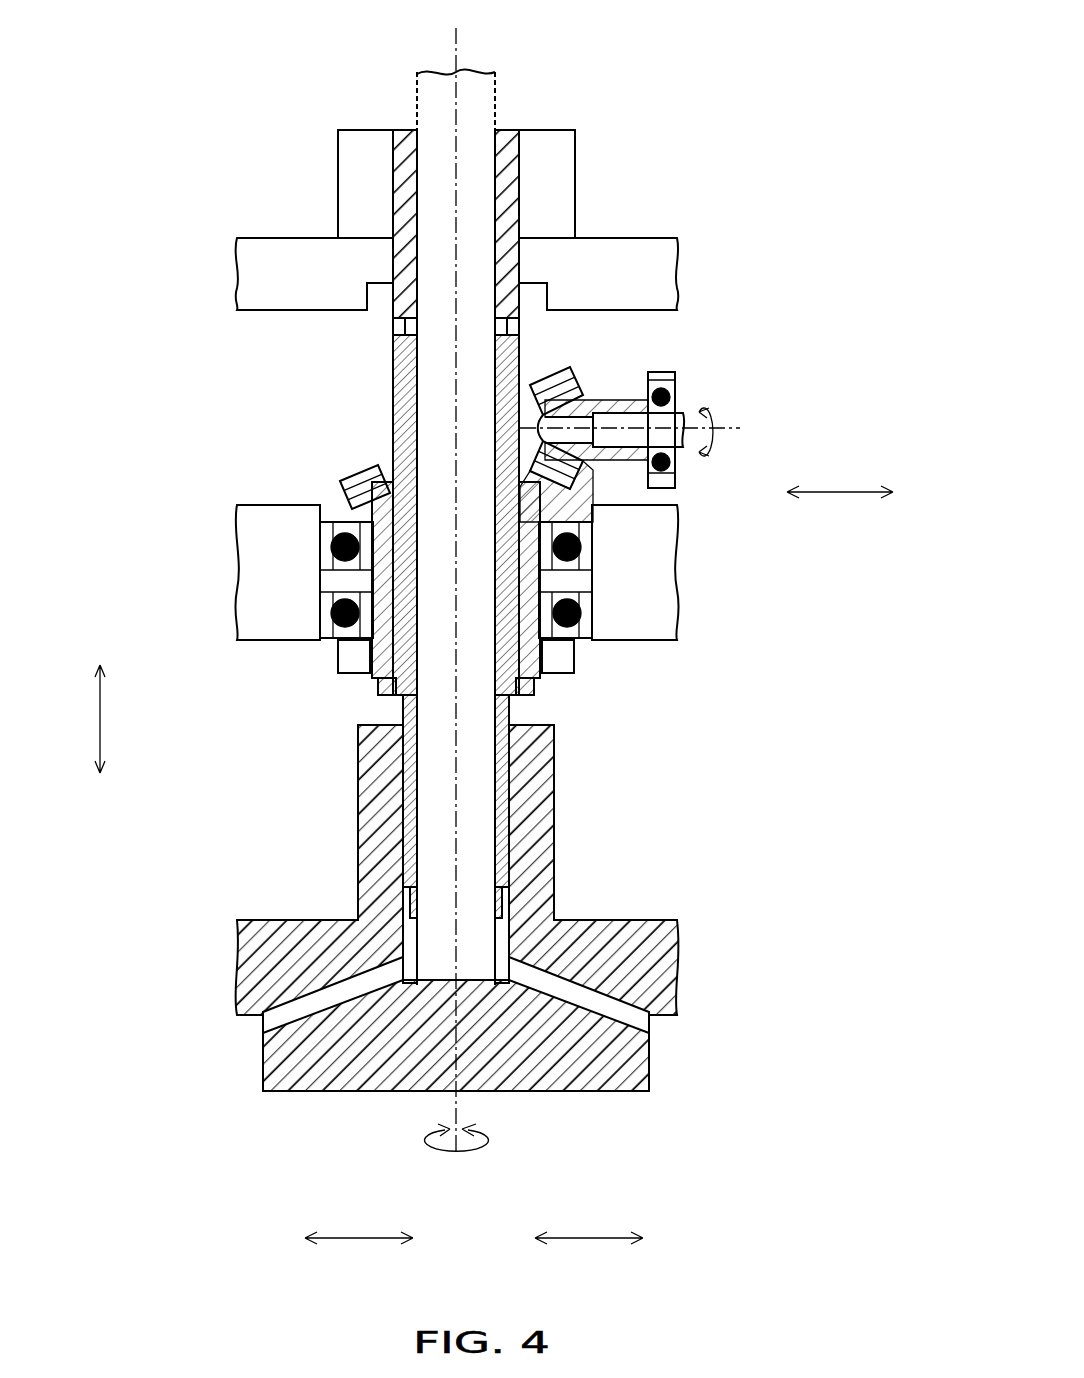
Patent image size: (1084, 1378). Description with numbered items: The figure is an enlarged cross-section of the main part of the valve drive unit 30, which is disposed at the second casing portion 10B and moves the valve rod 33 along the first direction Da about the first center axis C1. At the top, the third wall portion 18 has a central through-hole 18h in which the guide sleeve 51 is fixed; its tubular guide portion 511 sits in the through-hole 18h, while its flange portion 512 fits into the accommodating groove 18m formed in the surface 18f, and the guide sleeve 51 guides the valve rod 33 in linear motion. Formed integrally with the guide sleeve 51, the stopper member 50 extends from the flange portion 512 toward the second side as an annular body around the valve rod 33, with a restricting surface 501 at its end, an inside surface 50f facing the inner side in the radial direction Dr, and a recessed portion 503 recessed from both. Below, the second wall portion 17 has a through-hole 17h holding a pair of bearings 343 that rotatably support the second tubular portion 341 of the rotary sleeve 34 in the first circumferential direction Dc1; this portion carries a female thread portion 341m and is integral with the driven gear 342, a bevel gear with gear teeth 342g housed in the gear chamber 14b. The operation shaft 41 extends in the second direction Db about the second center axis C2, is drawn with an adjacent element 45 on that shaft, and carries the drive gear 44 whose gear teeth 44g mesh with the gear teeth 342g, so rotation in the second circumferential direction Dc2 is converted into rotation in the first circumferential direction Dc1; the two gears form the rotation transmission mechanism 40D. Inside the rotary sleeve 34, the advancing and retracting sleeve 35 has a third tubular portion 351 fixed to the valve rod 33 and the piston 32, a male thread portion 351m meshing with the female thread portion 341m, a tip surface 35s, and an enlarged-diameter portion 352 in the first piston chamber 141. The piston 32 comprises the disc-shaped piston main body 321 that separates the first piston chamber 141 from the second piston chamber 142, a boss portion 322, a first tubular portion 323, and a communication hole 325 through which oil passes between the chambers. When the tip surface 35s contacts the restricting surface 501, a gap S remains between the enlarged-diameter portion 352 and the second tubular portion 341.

The first center axis C1 is at (462, 58).
The valve rod 33 is at (485, 108).
The guide sleeve 51 is at (510, 162).
The guide portion 511 is at (397, 188).
The flange portion 512 is at (385, 290).
The recessed portion 503 is at (423, 318).
The third wall portion 18 is at (262, 247).
The through-hole 18h is at (500, 290).
The surface 18f is at (383, 318).
The accommodating groove 18m is at (383, 318).
The second casing portion 10B is at (680, 248).
The stopper member 50 is at (386, 326).
The restricting surface 501 is at (392, 342).
The inside surface 50f is at (507, 278).
The tip surface 35s is at (480, 310).
The advancing and retracting sleeve 35 is at (384, 427).
The third tubular portion 351 is at (522, 365).
The male thread portion 351m is at (383, 455).
The enlarged-diameter portion 352 is at (535, 684).
The rotation transmission mechanism 40D is at (532, 453).
The valve drive unit 30 is at (205, 388).
The rotary sleeve 34 is at (350, 683).
The second tubular portion 341 is at (345, 580).
The driven gear 342 is at (575, 550).
The bearings 343 is at (585, 622).
The female thread portion 341m is at (377, 652).
The through-hole 17h is at (580, 645).
The gap S is at (540, 683).
The second wall portion 17 is at (250, 515).
The gear chamber 14b is at (262, 512).
The gear teeth 342g is at (355, 473).
The drive gear 44 is at (576, 465).
The gear teeth 44g is at (575, 372).
The operation shaft 41 is at (660, 375).
The gear bearing 45 is at (676, 386).
The second center axis C2 is at (735, 428).
The second circumferential direction Dc2 is at (712, 448).
The second direction Db is at (837, 499).
The first direction Da is at (94, 717).
The piston 32 is at (232, 916).
The first tubular portion 323 is at (357, 872).
The piston main body 321 is at (257, 977).
The boss portion 322 is at (288, 1073).
The communication hole 325 is at (266, 1023).
The first circumferential direction Dc1 is at (443, 1151).
The first piston chamber 141 is at (782, 843).
The second piston chamber 142 is at (760, 1163).
The radial direction Dr is at (474, 1226).